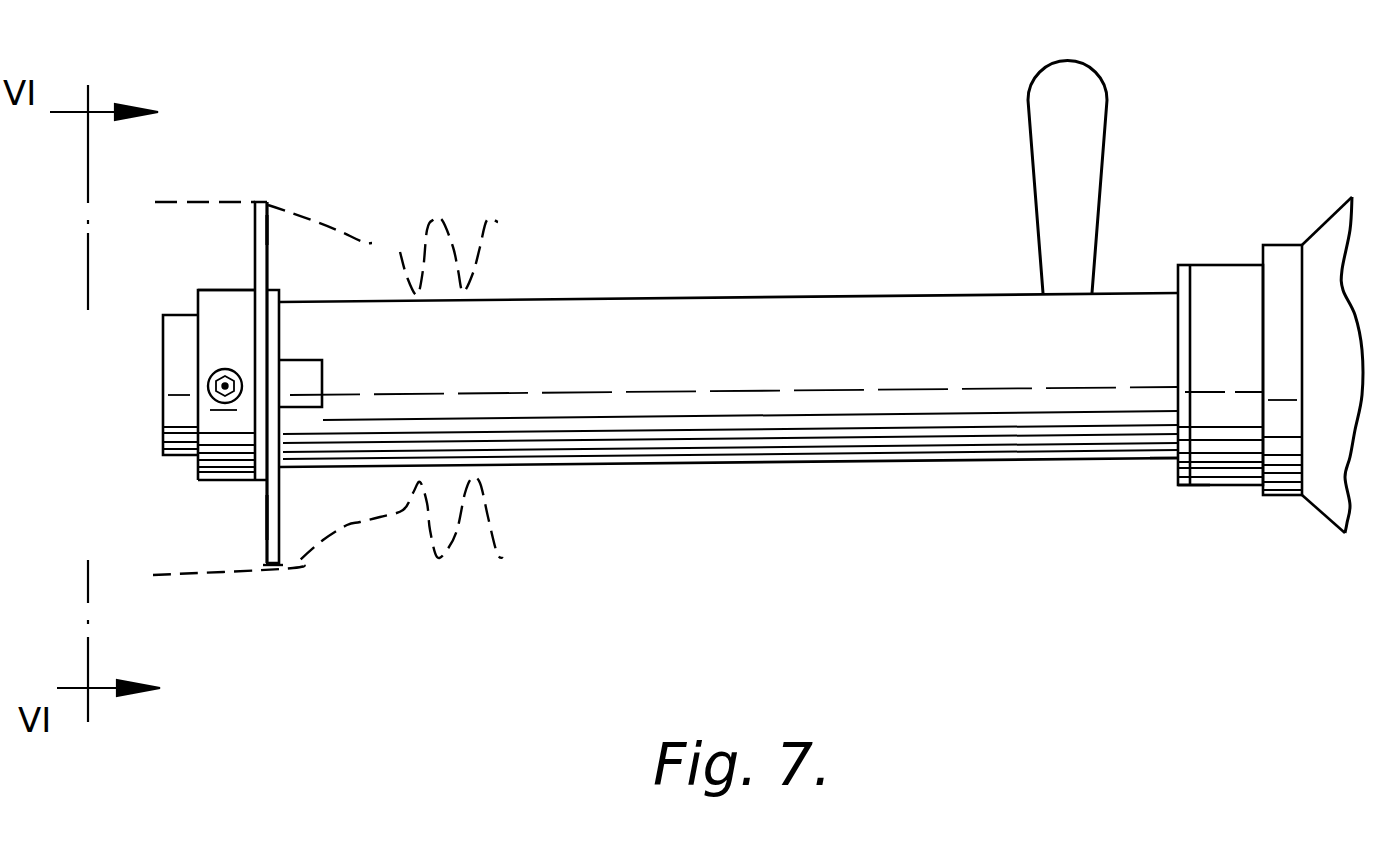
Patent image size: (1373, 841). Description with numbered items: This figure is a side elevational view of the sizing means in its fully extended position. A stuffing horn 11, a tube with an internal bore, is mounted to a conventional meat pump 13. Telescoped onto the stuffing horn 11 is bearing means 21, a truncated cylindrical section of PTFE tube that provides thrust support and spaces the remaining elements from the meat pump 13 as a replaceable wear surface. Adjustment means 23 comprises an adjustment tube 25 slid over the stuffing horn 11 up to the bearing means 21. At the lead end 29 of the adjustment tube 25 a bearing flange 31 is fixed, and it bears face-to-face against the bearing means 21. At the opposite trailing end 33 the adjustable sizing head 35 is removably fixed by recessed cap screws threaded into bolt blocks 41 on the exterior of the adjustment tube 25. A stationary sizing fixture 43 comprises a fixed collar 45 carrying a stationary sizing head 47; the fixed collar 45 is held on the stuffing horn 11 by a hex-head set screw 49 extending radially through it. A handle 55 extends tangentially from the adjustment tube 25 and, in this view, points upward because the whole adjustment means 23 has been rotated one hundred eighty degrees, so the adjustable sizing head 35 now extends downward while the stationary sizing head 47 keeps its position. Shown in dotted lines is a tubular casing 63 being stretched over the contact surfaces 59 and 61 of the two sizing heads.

The stuffing horn 11 is at (182, 313).
The meat pump 13 is at (1328, 520).
The bearing means 21 is at (1230, 263).
The adjustment means 23 is at (760, 472).
The adjustment tube 25 is at (667, 297).
The lead end 29 is at (1175, 455).
The bearing flange 31 is at (1180, 485).
The trailing end 33 is at (333, 275).
The adjustable sizing head 35 is at (265, 512).
The bolt blocks 41 is at (312, 373).
The stationary sizing fixture 43 is at (208, 282).
The fixed collar 45 is at (200, 290).
The stationary sizing head 47 is at (267, 230).
The hex-head set screw 49 is at (210, 397).
The handle 55 is at (1030, 127).
The contact surface 59 is at (272, 565).
The contact surface 61 is at (263, 200).
The tubular casing 63 is at (395, 245).